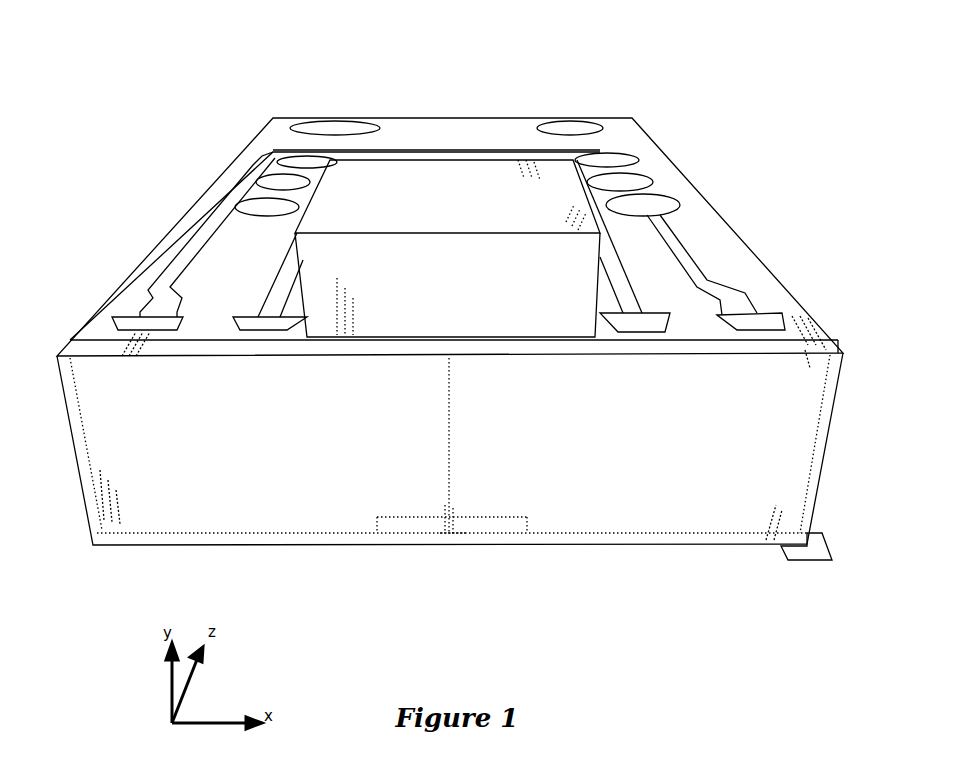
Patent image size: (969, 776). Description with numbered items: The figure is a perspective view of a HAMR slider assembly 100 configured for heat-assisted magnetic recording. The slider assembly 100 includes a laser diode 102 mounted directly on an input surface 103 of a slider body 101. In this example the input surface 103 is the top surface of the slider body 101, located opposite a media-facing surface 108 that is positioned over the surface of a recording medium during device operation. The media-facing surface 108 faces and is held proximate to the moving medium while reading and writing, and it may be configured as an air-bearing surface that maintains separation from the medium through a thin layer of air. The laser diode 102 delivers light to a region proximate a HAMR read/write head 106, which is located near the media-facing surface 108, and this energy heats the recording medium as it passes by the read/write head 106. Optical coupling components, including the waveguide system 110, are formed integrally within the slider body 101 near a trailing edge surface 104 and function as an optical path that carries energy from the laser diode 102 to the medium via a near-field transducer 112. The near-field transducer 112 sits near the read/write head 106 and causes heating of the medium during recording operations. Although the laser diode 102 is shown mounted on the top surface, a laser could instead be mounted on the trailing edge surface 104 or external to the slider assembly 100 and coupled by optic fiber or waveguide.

The HAMR slider assembly 100 is at (648, 58).
The slider body 101 is at (247, 142).
The laser diode 102 is at (407, 167).
The input surface 103 is at (123, 297).
The trailing edge surface 104 is at (155, 522).
The read/write head 106 is at (453, 535).
The media-facing surface 108 is at (822, 562).
The waveguide system 110 is at (450, 420).
The near-field transducer 112 is at (453, 533).